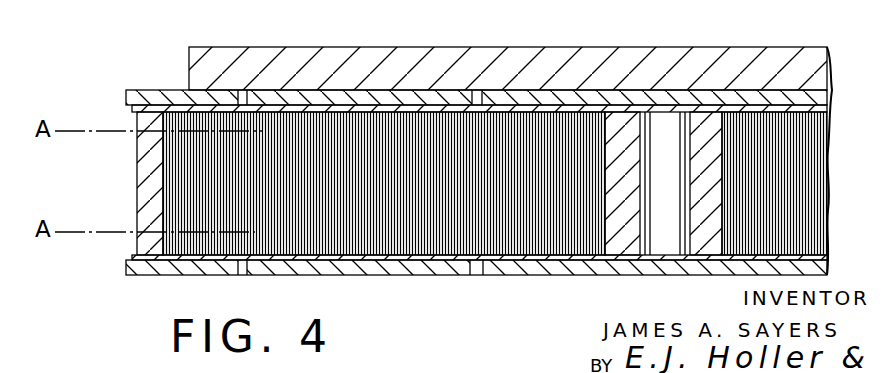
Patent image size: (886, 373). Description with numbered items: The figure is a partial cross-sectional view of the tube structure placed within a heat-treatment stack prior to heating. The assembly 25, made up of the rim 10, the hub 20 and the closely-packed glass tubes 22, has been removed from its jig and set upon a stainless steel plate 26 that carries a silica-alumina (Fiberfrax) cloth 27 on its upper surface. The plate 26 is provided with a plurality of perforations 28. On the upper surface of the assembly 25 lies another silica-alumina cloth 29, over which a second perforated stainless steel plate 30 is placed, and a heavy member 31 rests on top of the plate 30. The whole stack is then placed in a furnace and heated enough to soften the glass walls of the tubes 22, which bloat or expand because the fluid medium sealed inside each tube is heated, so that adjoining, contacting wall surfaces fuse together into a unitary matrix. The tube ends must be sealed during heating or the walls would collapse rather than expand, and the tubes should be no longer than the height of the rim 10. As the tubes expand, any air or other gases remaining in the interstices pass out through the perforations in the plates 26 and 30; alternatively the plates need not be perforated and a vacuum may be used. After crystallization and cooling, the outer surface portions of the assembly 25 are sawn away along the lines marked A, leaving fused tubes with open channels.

The rim 10 is at (137, 177).
The hub 20 is at (623, 225).
The glass tubes 22 is at (367, 213).
The assembly 25 is at (873, 188).
The stainless steel plate 26 is at (320, 265).
The silica-alumina cloth 27 is at (428, 262).
The perforations 28 is at (243, 276).
The silica-alumina cloth 29 is at (133, 112).
The perforated stainless steel plate 30 is at (160, 99).
The heavy member 31 is at (217, 63).